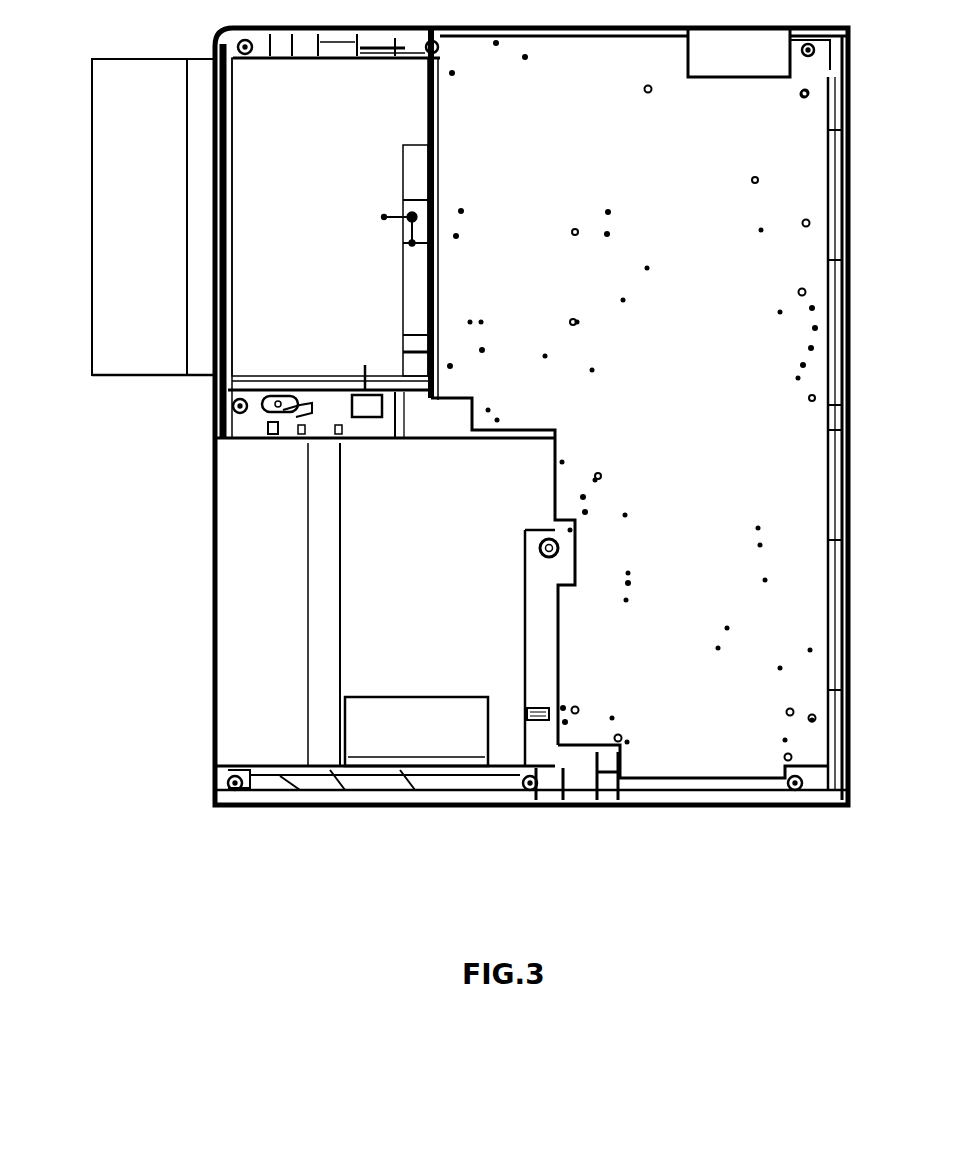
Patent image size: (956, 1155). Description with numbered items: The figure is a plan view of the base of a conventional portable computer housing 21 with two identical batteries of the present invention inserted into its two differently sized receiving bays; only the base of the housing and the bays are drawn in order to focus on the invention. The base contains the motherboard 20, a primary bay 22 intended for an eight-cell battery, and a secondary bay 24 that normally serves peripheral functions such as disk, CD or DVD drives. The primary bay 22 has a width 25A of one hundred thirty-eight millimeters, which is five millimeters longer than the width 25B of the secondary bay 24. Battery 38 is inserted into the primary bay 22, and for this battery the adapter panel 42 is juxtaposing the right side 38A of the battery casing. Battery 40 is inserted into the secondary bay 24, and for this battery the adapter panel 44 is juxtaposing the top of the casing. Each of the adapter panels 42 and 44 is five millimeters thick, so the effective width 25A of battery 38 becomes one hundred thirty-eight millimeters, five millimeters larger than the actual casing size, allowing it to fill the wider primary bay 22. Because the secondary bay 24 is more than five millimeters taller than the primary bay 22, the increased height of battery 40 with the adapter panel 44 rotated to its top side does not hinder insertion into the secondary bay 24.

The motherboard 20 is at (698, 416).
The housing 21 is at (700, 807).
The primary bay 22 is at (340, 117).
The secondary bay 24 is at (428, 591).
The width of primary bay 25A is at (48, 59).
The width of secondary bay 25B is at (178, 443).
The battery 38 is at (140, 70).
The right side of casing 38A is at (146, 378).
The battery 40 is at (250, 747).
The adapter panel 42 is at (272, 384).
The adapter panel 44 is at (405, 712).